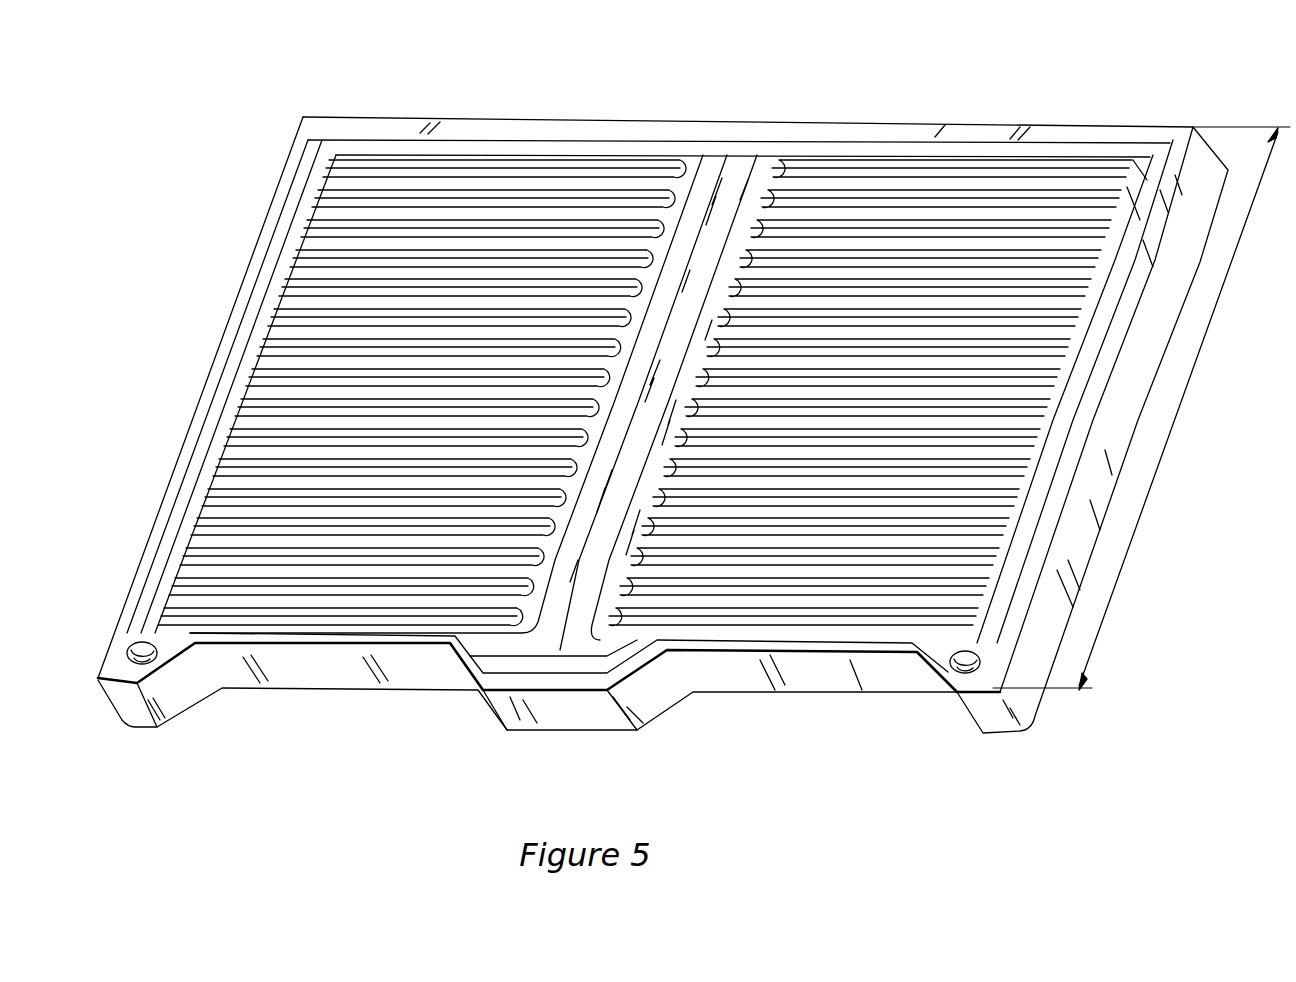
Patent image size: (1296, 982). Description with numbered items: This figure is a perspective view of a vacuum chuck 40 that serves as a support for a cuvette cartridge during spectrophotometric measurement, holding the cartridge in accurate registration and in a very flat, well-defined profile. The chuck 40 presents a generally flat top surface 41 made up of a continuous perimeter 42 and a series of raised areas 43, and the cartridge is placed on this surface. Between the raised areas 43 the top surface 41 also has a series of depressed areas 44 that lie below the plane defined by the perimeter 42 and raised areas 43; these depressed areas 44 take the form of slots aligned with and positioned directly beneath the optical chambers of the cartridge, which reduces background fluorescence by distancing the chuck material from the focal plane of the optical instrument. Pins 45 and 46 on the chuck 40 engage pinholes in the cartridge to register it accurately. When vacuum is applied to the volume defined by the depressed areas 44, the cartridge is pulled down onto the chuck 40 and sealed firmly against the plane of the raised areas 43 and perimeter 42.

The vacuum chuck 40 is at (694, 397).
The top surface 41 is at (1178, 409).
The continuous perimeter 42 is at (337, 115).
The raised areas 43 is at (432, 342).
The depressed areas 44 is at (352, 165).
The pin 45 is at (182, 665).
The pin 46 is at (942, 672).